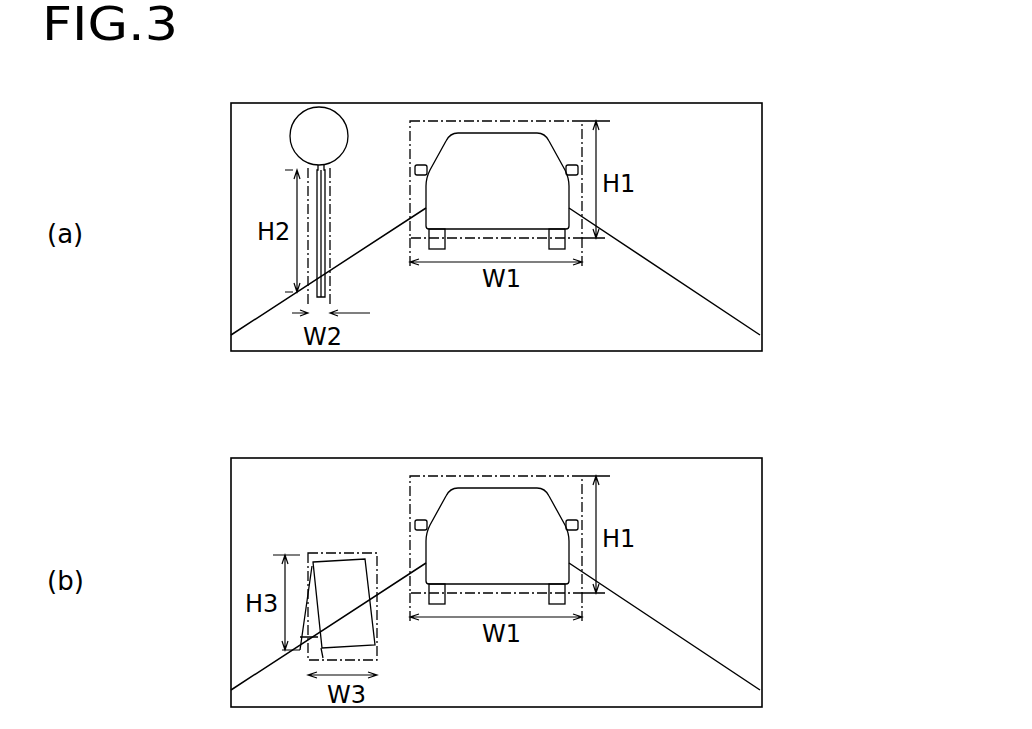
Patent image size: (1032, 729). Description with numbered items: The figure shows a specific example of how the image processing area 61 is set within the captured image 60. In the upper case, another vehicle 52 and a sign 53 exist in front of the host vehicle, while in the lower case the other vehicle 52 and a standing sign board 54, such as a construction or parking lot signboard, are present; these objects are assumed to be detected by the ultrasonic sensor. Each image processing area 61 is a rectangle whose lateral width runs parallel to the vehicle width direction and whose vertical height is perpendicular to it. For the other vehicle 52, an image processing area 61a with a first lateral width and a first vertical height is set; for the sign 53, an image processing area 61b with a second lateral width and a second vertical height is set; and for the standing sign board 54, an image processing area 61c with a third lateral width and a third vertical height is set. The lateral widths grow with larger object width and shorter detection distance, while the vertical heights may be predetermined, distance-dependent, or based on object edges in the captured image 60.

The other vehicle 52 is at (525, 133).
The sign 53 is at (292, 134).
The standing sign board 54 is at (320, 555).
The captured image 60 is at (742, 103).
The image processing area 61 is at (493, 60).
The image processing area 61a is at (412, 121).
The image processing area 61b is at (331, 182).
The image processing area 61c is at (358, 553).